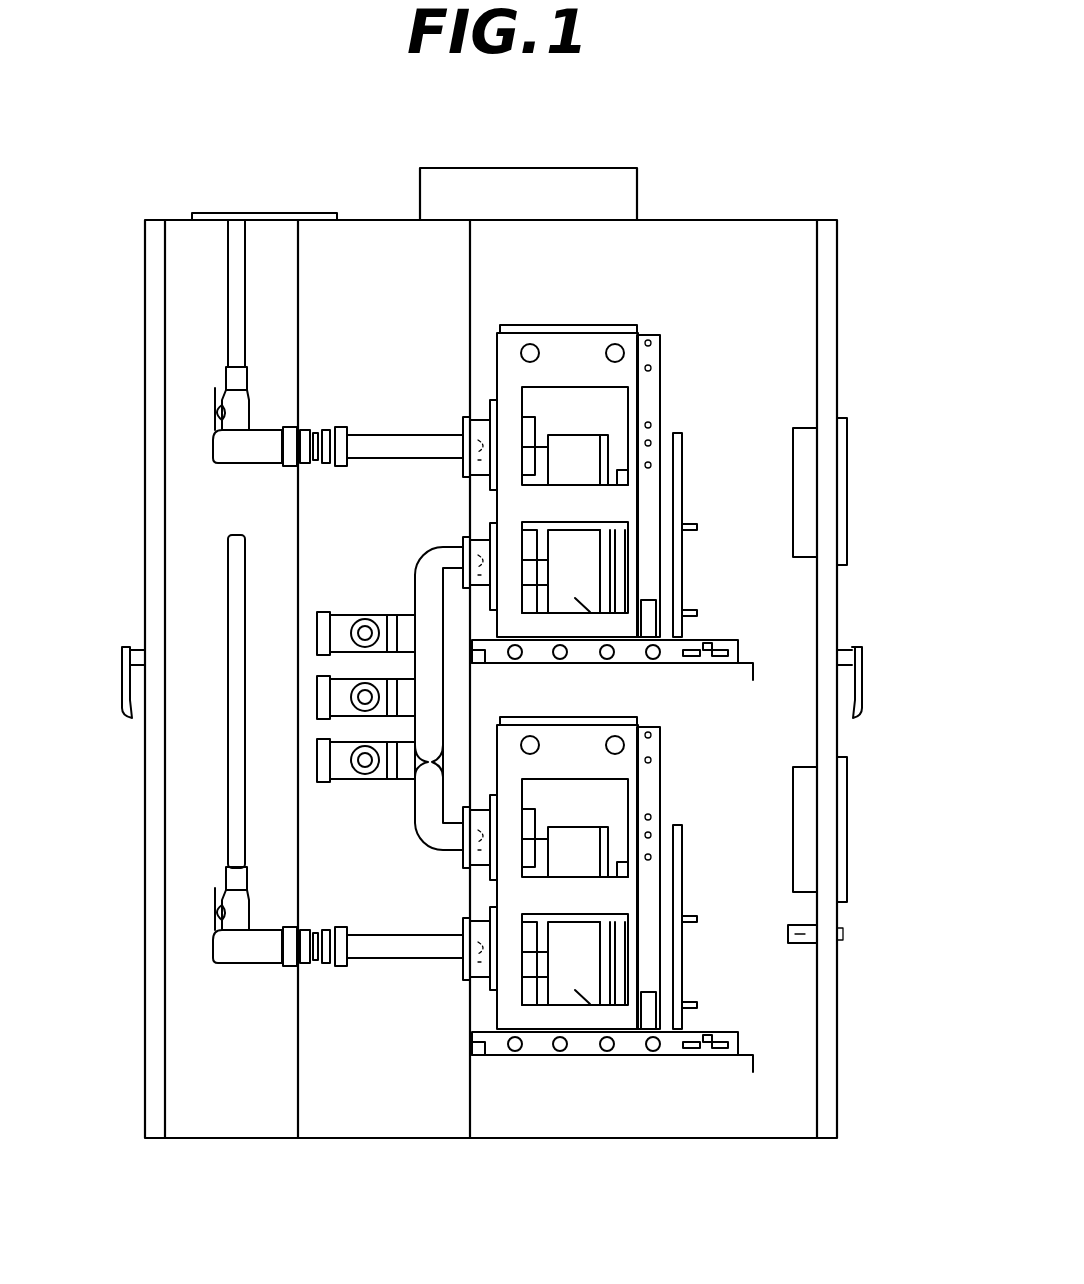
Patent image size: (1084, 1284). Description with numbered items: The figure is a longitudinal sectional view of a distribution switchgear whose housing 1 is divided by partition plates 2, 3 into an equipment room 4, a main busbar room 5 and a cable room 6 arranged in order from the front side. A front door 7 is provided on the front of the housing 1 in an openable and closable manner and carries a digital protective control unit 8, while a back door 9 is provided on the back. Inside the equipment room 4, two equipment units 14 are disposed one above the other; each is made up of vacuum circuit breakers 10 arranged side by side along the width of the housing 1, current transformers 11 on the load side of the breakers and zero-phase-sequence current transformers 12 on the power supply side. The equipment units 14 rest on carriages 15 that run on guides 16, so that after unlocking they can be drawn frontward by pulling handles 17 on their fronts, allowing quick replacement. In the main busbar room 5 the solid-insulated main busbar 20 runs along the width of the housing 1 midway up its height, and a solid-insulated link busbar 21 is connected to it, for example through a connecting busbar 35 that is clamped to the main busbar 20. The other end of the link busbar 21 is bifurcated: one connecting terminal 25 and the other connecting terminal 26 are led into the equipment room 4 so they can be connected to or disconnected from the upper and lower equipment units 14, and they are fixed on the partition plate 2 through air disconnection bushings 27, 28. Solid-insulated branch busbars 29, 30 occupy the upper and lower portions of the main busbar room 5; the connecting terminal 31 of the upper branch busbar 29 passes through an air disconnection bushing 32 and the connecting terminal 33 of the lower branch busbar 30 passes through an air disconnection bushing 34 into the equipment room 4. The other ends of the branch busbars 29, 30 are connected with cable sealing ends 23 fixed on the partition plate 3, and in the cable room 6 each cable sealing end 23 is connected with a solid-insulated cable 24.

The housing 1 is at (673, 222).
The partition plate 2 is at (470, 246).
The partition plate 3 is at (310, 248).
The equipment room 4 is at (790, 238).
The main busbar room 5 is at (383, 240).
The cable room 6 is at (208, 238).
The front door 7 is at (838, 252).
The digital protective control unit 8 is at (848, 430).
The back door 9 is at (152, 313).
The vacuum circuit breaker 10 is at (590, 435).
The current transformer 11 is at (527, 418).
The zero-phase-sequence current transformer 12 is at (540, 548).
The equipment unit 14 is at (690, 315).
The carriage 15 is at (690, 639).
The guide 16 is at (745, 660).
The handle 17 is at (688, 527).
The solid-insulated main busbar 20 is at (365, 622).
The solid-insulated link busbar 21 is at (415, 583).
The cable sealing end 23 is at (228, 462).
The solid-insulated cable 24 is at (228, 262).
The connecting terminal 25 is at (478, 548).
The connecting terminal 26 is at (478, 858).
The air disconnection bushing 27 is at (478, 530).
The air disconnection bushing 28 is at (478, 878).
The upper branch busbar 29 is at (362, 462).
The lower branch busbar 30 is at (360, 962).
The connecting terminal 31 is at (478, 445).
The air disconnection bushing 32 is at (478, 410).
The connecting terminal 33 is at (478, 970).
The air disconnection bushing 34 is at (478, 990).
The connecting busbar 35 is at (387, 648).